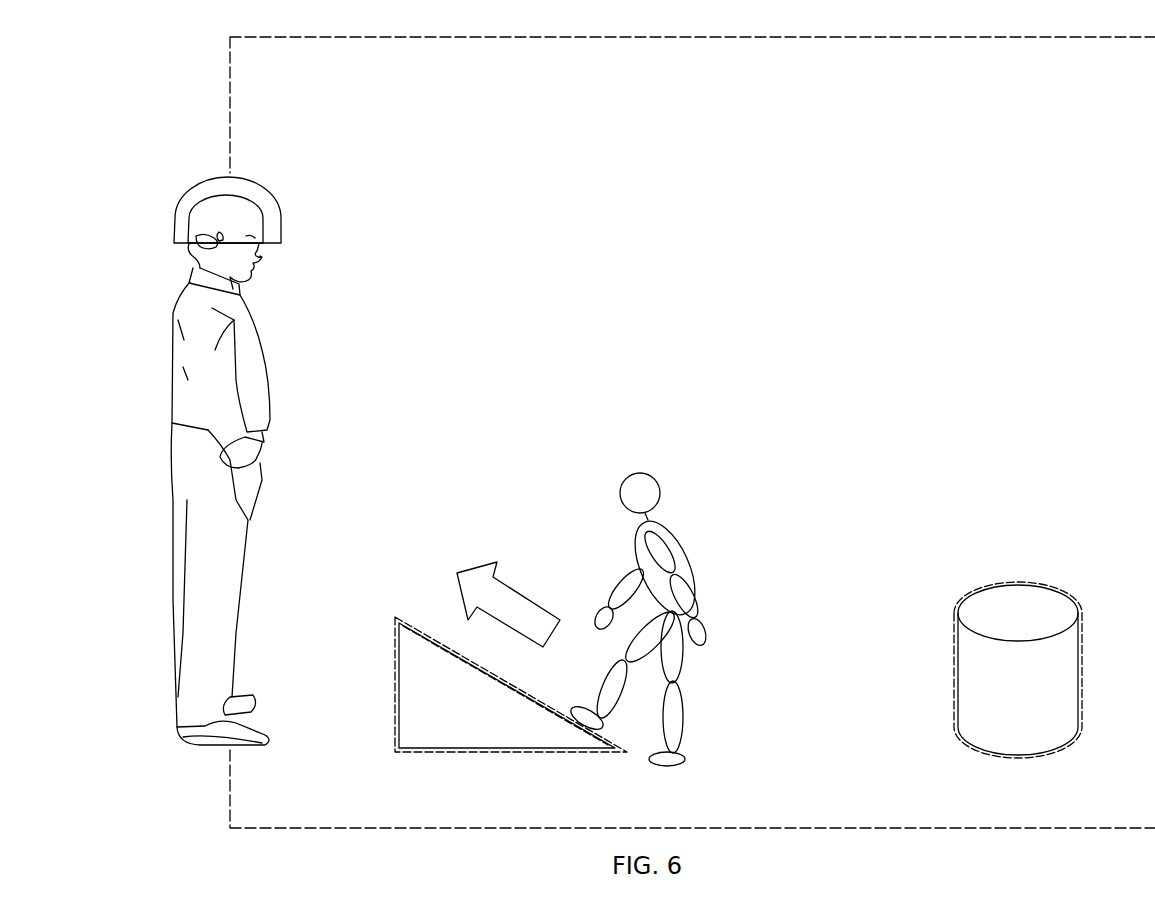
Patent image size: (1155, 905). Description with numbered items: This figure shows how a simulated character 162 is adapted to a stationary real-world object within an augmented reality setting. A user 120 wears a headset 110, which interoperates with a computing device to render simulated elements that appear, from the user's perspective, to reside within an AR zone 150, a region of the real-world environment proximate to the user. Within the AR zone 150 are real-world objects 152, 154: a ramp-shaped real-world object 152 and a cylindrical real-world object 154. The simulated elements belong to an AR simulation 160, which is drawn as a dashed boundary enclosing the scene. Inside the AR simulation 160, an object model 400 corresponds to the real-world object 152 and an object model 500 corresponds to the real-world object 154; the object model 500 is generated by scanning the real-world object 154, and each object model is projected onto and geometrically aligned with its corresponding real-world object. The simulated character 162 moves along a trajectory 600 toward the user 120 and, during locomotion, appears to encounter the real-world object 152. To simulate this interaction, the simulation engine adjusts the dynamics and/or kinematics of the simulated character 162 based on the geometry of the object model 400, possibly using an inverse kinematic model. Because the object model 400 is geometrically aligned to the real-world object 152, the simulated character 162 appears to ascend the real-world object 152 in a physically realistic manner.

The headset 110 is at (196, 183).
The user 120 is at (172, 358).
The AR zone 150 is at (1079, 99).
The real-world object 152 is at (452, 726).
The real-world object 154 is at (999, 694).
The AR simulation 160 is at (412, 105).
The simulated character 162 is at (646, 472).
The object model 400 is at (471, 684).
The object model 500 is at (1029, 623).
The trajectory 600 is at (508, 604).